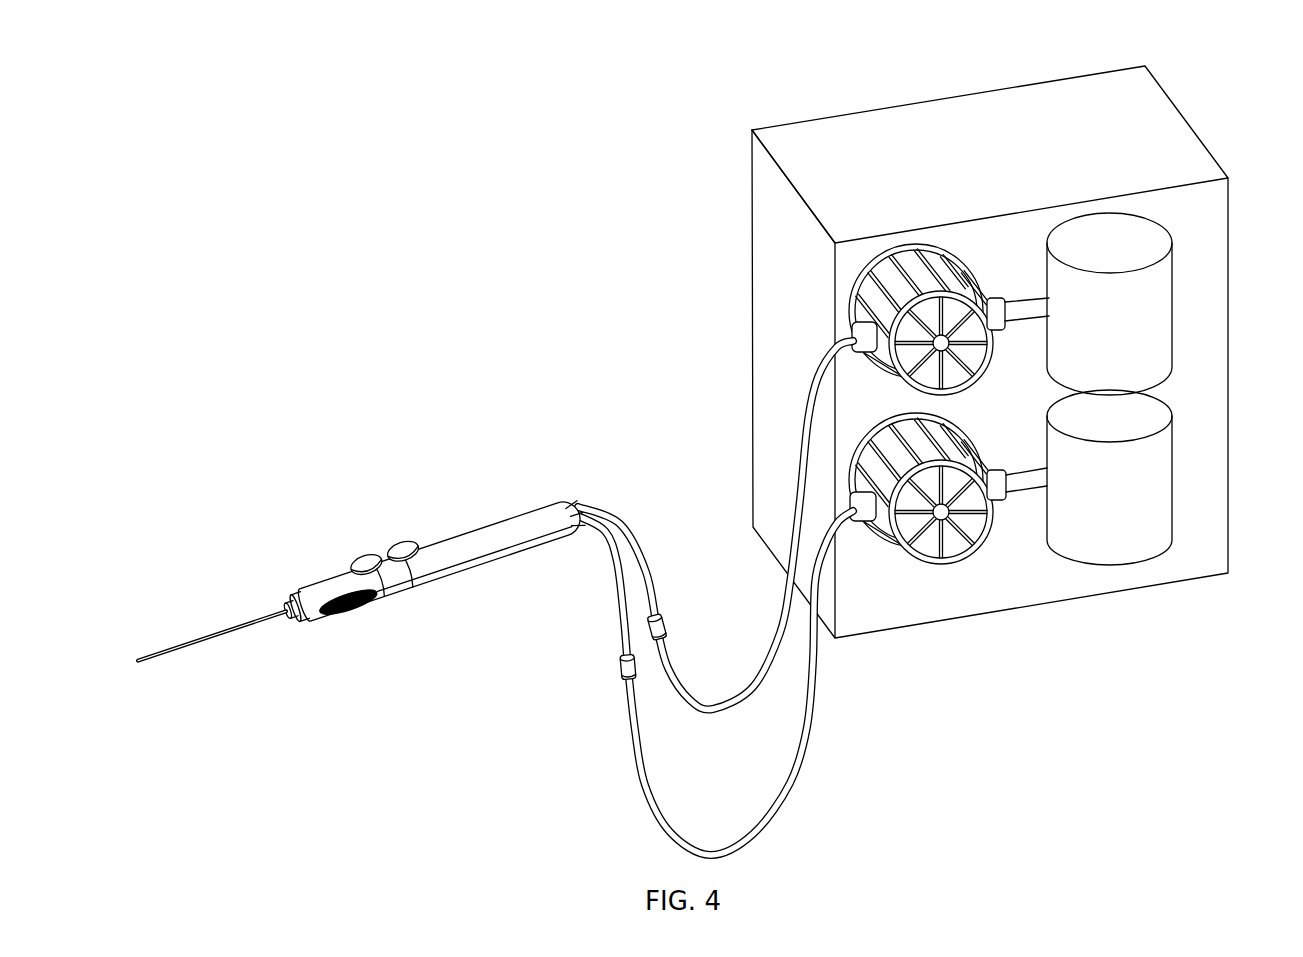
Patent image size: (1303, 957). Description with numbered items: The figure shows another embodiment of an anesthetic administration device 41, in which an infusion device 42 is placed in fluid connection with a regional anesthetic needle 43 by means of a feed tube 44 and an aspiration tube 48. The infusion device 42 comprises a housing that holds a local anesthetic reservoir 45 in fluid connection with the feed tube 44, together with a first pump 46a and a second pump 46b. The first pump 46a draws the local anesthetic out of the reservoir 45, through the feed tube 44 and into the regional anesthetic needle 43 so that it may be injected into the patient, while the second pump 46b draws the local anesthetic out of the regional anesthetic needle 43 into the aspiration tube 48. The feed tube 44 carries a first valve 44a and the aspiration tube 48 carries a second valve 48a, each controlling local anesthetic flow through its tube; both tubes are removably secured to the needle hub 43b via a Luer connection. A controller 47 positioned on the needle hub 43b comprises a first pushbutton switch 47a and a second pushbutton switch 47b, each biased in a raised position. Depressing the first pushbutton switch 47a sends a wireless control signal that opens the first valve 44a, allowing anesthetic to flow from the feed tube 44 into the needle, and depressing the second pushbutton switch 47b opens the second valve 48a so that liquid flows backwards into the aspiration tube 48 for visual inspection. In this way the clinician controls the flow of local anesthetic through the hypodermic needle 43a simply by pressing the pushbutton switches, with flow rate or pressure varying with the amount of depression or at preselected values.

The anesthetic administration device 41 is at (1290, 67).
The infusion device 42 is at (1030, 607).
The regional anesthetic needle 43 is at (124, 554).
The hypodermic needle 43a is at (188, 650).
The needle hub 43b is at (352, 591).
The feed tube 44 is at (650, 567).
The first valve 44a is at (667, 628).
The local anesthetic reservoir 45 is at (1165, 295).
The first pump 46a is at (875, 300).
The second pump 46b is at (925, 548).
The controller 47 is at (416, 570).
The first pushbutton switch 47a is at (377, 577).
The second pushbutton switch 47b is at (410, 563).
The aspiration tube 48 is at (648, 798).
The second valve 48a is at (625, 670).